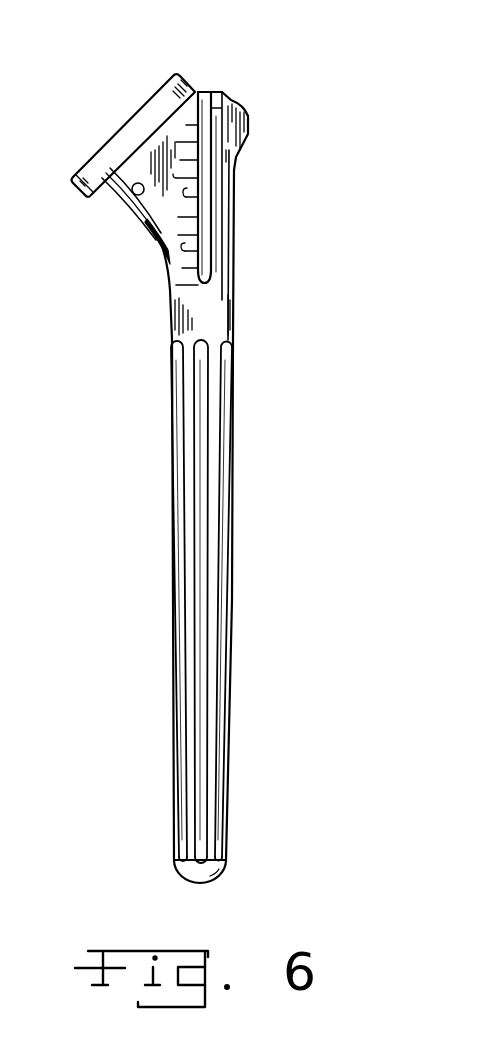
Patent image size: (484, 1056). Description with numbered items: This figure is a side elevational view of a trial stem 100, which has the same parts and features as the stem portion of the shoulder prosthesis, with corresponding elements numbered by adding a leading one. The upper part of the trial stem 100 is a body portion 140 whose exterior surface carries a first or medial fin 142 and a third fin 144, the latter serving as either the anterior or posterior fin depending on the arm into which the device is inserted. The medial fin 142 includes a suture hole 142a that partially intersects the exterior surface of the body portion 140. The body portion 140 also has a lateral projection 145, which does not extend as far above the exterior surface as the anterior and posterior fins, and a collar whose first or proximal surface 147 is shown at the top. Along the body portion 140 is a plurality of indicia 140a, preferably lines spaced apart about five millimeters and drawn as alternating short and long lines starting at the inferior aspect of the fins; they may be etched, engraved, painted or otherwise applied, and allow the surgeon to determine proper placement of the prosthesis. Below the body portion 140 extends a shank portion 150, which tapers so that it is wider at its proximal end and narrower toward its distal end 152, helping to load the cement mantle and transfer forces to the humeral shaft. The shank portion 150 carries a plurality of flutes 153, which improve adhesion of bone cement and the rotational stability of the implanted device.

The trial stem 100 is at (133, 441).
The body portion 140 is at (105, 252).
The indicia 140a is at (176, 158).
The medial fin 142 is at (105, 252).
The suture hole 142a is at (133, 192).
The third fin 144 is at (210, 167).
The lateral projection 145 is at (241, 120).
The proximal surface 147 is at (142, 105).
The shank portion 150 is at (198, 631).
The distal end 152 is at (197, 882).
The flutes 153 is at (178, 605).